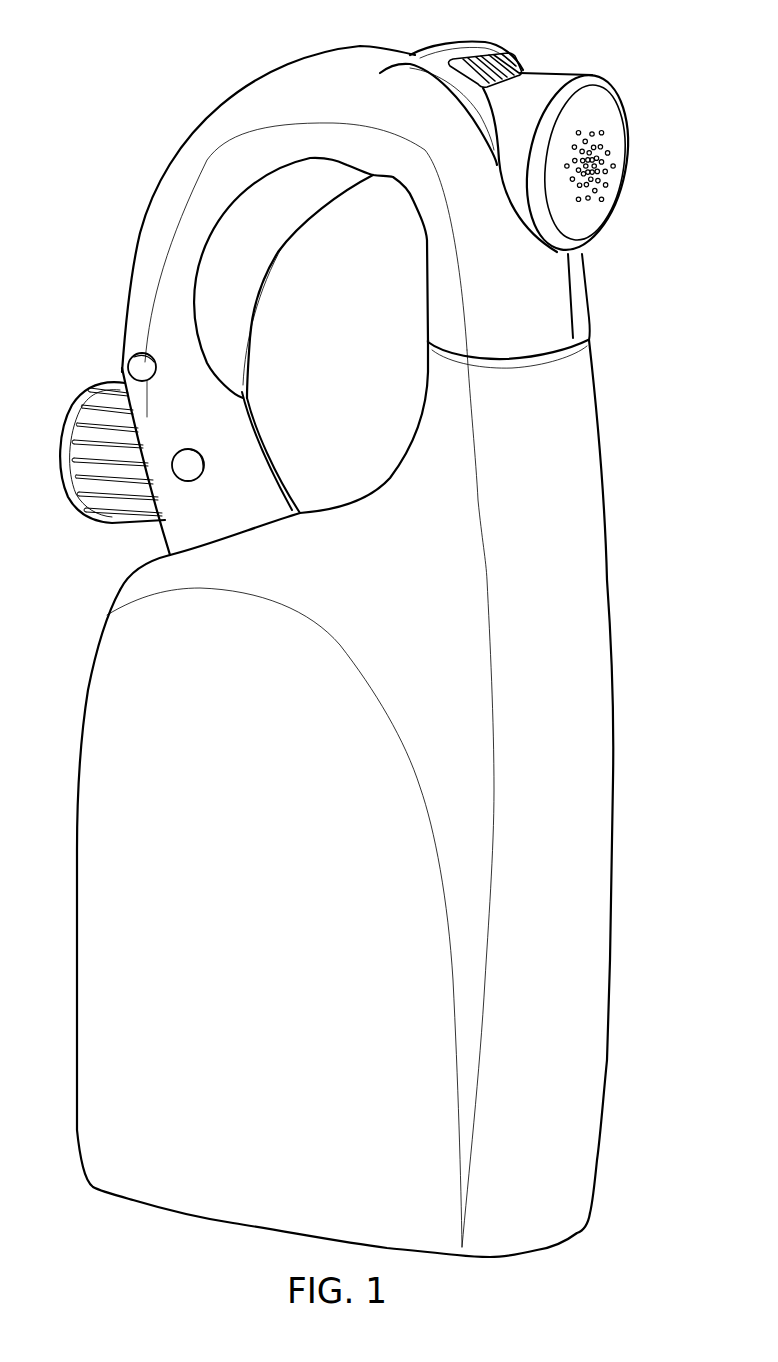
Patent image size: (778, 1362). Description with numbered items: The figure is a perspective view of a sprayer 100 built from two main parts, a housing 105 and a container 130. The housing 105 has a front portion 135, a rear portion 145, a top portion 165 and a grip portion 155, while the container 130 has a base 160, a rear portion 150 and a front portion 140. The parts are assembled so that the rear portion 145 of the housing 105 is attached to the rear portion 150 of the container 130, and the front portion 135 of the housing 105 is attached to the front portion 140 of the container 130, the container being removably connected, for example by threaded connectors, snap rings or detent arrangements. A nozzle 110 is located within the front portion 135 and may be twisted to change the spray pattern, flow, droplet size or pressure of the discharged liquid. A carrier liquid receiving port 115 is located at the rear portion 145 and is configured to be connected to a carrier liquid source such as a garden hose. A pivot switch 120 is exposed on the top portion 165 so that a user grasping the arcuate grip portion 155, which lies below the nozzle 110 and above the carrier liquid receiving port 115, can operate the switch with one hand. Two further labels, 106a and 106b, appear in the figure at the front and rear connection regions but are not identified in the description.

The sprayer 100 is at (88, 66).
The housing 105 is at (190, 165).
The connection region of neck 106a is at (593, 317).
The connection region of trigger 106b is at (167, 537).
The nozzle 110 is at (603, 173).
The carrier liquid receiving port 115 is at (107, 380).
The pivot switch 120 is at (497, 62).
The container 130 is at (93, 998).
The front portion of housing 135 is at (562, 293).
The front portion of container 140 is at (582, 433).
The rear portion of housing 145 is at (257, 458).
The rear portion of container 150 is at (150, 583).
The grip portion 155 is at (275, 233).
The base 160 is at (588, 1035).
The top portion of housing 165 is at (317, 67).